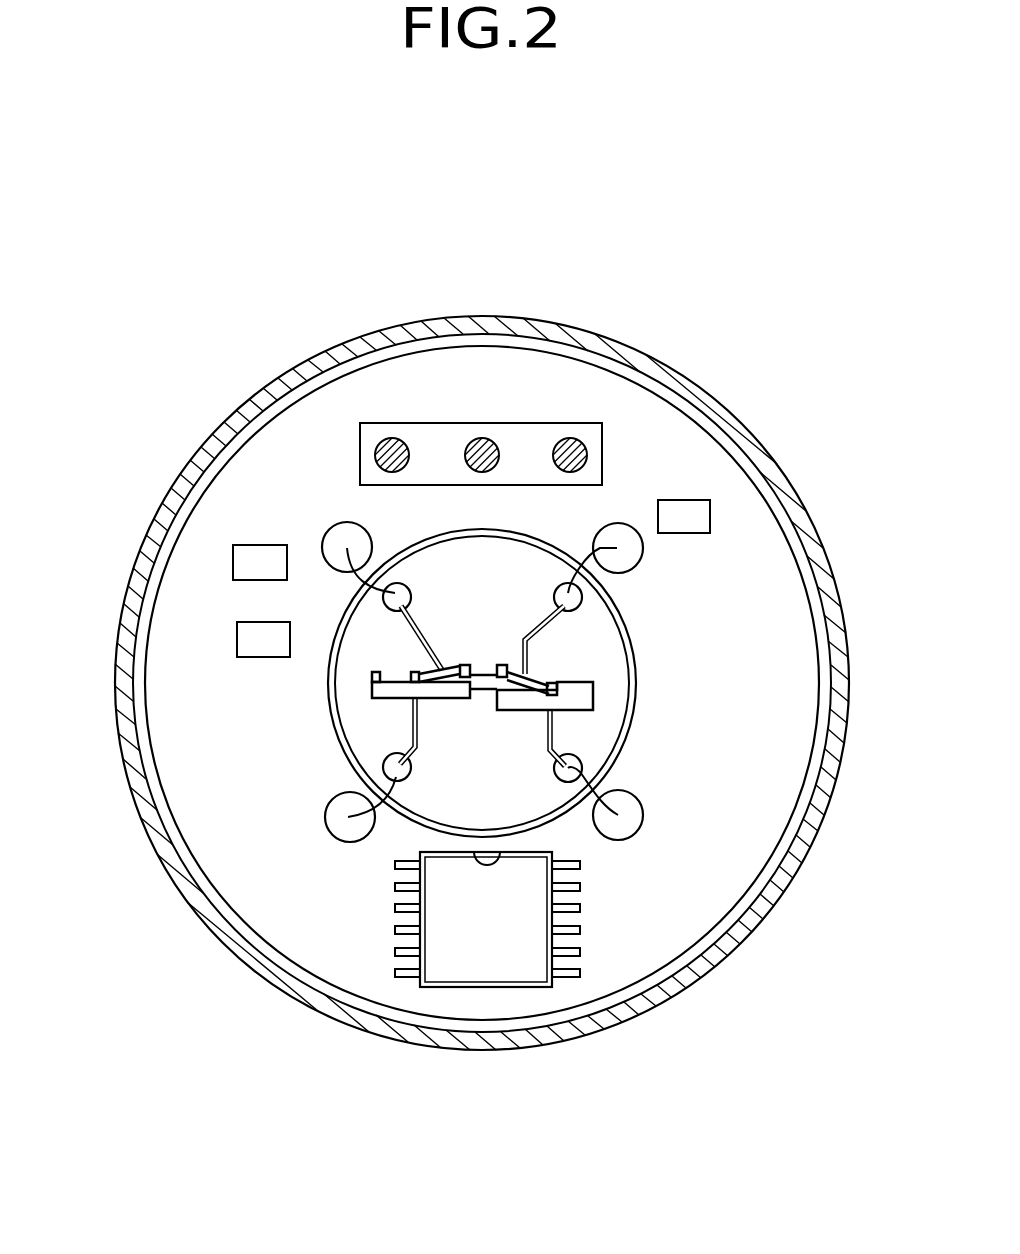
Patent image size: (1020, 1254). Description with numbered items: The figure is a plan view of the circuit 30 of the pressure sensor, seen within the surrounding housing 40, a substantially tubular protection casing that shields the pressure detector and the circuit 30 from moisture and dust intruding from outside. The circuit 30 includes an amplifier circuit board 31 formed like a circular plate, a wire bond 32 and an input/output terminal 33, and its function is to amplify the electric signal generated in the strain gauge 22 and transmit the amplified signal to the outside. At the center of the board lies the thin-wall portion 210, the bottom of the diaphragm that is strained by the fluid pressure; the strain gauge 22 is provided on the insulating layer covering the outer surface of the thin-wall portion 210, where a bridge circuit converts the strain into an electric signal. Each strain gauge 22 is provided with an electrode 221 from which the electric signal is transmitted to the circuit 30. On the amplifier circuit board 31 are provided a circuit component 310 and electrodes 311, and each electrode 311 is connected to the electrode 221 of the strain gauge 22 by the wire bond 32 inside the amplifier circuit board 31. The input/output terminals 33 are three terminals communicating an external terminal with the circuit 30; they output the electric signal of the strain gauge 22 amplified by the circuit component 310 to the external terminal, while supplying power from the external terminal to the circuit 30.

The circuit 30 is at (282, 478).
The housing 40 is at (300, 362).
The amplifier circuit board 31 is at (733, 843).
The input/output terminal 33 is at (575, 440).
The thin-wall portion 210 is at (362, 720).
The electrode 311 is at (625, 532).
The wire bond 32 is at (617, 548).
The electrode 221 is at (397, 594).
The strain gauge 22 is at (548, 626).
The circuit component 310 is at (477, 960).